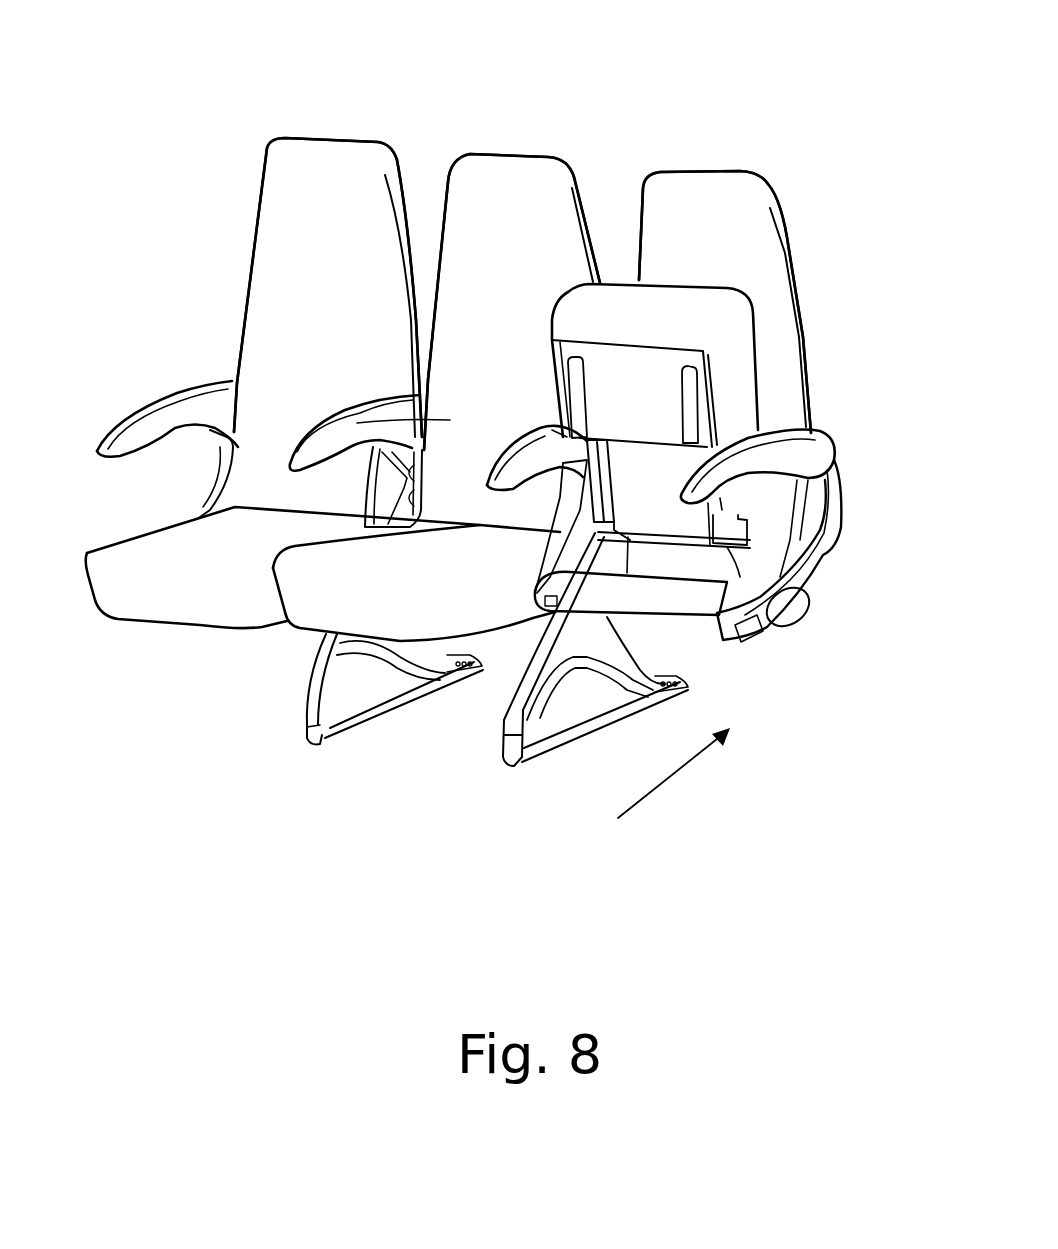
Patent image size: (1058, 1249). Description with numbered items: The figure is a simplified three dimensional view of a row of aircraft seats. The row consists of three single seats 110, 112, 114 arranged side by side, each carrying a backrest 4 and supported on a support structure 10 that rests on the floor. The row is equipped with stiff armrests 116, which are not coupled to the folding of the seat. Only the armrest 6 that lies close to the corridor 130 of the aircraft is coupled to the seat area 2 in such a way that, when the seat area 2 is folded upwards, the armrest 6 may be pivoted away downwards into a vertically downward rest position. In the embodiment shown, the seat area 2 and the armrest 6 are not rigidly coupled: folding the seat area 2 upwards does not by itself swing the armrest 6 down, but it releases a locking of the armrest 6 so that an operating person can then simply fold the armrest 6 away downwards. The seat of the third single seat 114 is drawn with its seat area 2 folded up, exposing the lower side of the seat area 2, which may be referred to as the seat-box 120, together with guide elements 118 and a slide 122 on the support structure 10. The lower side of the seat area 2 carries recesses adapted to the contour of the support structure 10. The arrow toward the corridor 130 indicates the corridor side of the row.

The seat area 2 is at (147, 605).
The backrest 4 is at (273, 207).
The armrest 6 is at (818, 432).
The support structure 10 is at (520, 712).
The single seat 110 is at (331, 138).
The single seat 112 is at (503, 152).
The single seat 114 is at (700, 172).
The stiff armrests 116 is at (138, 423).
The guide rail 118 is at (696, 398).
The seat-box 120 is at (604, 360).
The seat cushion slide 122 is at (723, 513).
The corridor 130 is at (674, 780).